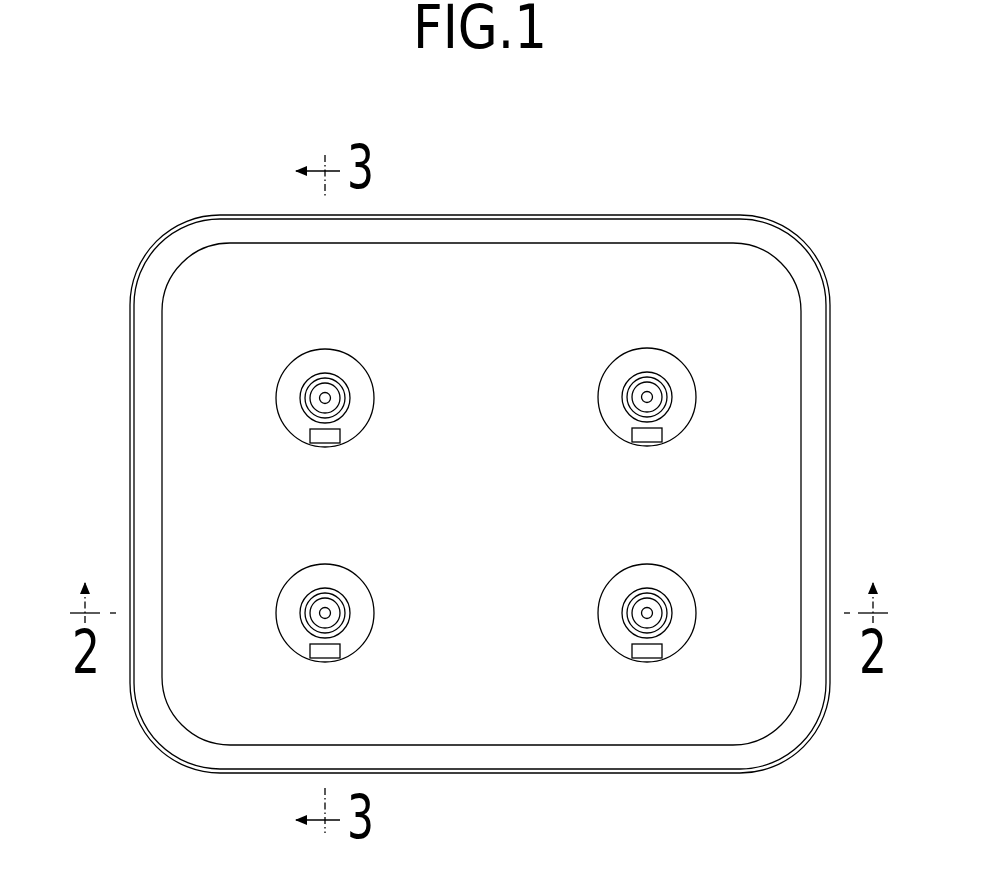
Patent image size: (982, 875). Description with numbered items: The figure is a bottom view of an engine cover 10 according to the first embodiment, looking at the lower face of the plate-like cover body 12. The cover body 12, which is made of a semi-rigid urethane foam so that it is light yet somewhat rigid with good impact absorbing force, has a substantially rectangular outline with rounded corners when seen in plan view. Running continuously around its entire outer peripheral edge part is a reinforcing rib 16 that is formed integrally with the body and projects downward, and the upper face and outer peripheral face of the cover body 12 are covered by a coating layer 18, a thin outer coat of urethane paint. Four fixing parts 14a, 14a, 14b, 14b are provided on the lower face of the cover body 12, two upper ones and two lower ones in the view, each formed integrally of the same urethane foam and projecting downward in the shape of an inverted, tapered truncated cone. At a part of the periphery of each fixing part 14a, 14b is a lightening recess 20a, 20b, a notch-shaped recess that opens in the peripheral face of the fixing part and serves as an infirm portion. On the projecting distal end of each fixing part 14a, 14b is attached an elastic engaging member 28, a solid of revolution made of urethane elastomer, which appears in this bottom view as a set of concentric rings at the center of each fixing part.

The engine cover 10 is at (492, 458).
The cover body 12 is at (487, 277).
The fixing part 14a is at (281, 358).
The fixing part 14b is at (281, 573).
The reinforcing rib 16 is at (566, 233).
The coating layer 18 is at (649, 215).
The lightening recess 20a is at (331, 440).
The lightening recess 20b is at (331, 655).
The elastic engaging member 28 is at (345, 376).